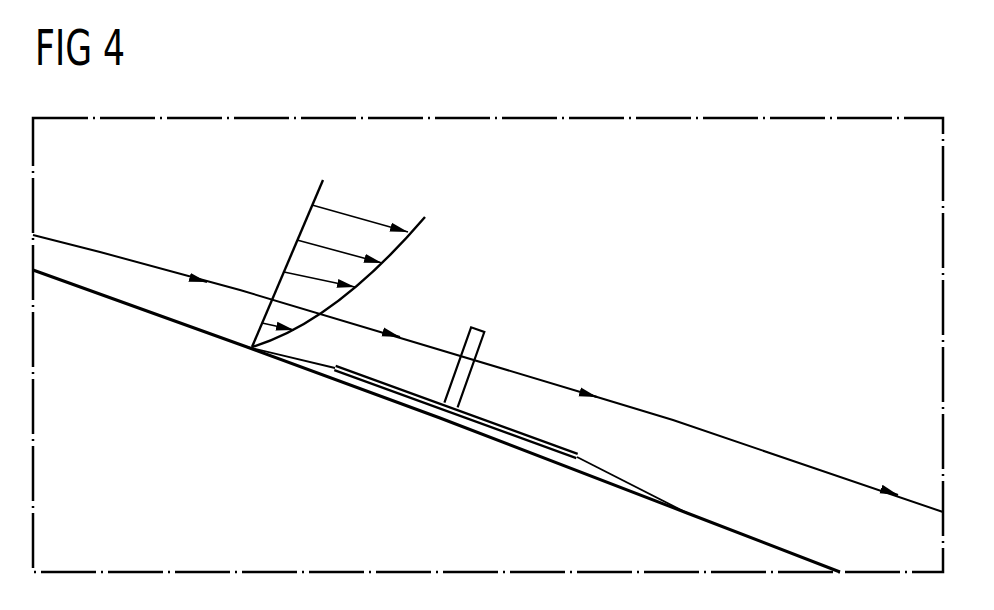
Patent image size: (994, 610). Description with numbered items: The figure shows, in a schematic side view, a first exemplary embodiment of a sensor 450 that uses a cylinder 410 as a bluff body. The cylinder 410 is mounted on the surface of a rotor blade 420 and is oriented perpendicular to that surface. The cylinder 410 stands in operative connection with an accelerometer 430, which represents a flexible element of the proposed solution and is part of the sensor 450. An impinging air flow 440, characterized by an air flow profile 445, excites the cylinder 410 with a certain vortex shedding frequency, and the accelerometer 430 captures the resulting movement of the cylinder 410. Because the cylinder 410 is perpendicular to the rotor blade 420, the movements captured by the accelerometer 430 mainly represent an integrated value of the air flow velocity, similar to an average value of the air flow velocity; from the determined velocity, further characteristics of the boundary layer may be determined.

The cylinder 410 is at (475, 333).
The rotor blade 420 is at (700, 519).
The accelerometer 430 is at (485, 428).
The air flow 440 is at (107, 257).
The air flow profile 445 is at (375, 200).
The sensor 450 is at (560, 320).